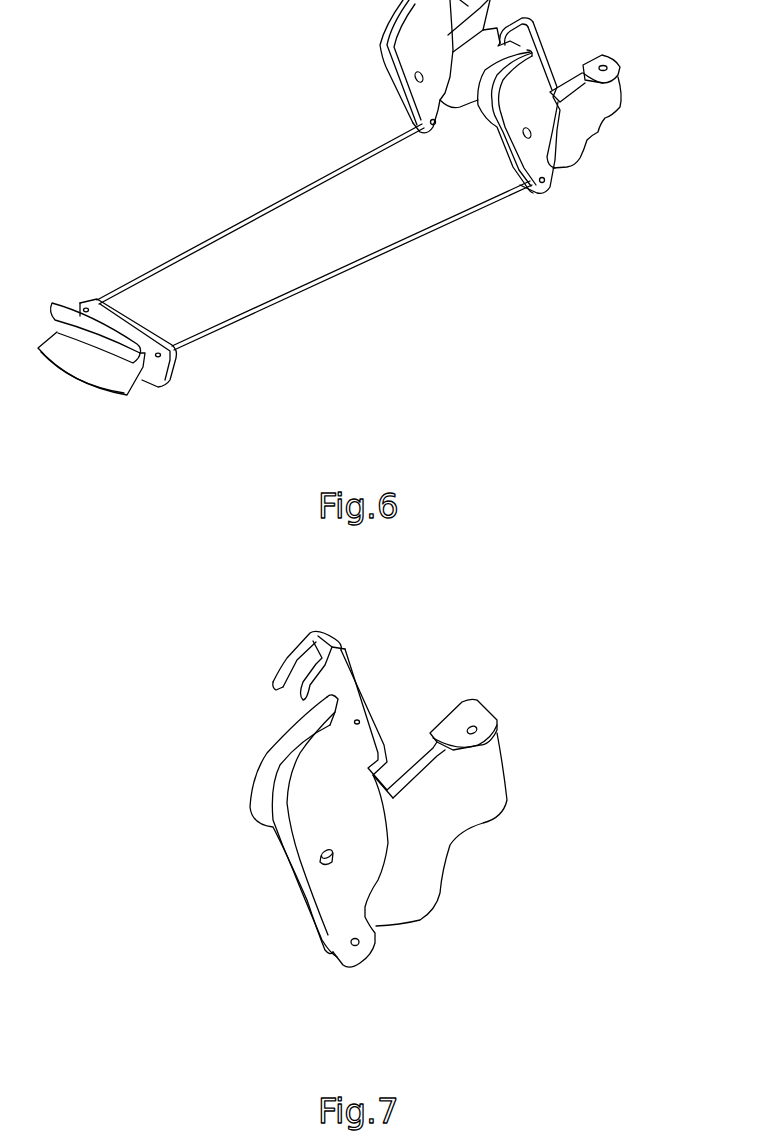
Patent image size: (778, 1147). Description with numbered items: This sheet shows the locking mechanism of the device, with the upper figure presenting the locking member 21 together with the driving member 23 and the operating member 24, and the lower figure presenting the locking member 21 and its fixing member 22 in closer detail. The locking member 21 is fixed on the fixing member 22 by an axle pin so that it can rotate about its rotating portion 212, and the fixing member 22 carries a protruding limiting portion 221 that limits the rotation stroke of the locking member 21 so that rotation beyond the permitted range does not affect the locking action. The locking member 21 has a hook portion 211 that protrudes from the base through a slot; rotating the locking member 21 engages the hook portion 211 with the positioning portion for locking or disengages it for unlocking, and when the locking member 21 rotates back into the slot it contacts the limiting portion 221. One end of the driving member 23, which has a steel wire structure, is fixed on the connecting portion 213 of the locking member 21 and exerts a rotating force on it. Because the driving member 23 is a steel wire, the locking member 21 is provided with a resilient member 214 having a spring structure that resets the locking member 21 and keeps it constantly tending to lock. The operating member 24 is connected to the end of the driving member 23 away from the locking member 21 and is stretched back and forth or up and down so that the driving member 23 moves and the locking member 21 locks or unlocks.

In FIG. 6, the locking member 21 is at (533, 157).
In FIG. 7, the locking member 21 is at (238, 802).
In FIG. 6, the fixing member 22 is at (575, 118).
In FIG. 7, the fixing member 22 is at (494, 812).
In FIG. 6, the driving member 23 is at (308, 283).
In FIG. 6, the operating member 24 is at (117, 368).
In FIG. 7, the hook portion 211 is at (328, 707).
In FIG. 7, the rotating portion 212 is at (322, 863).
In FIG. 7, the connecting portion 213 is at (264, 955).
In FIG. 7, the resilient member 214 is at (324, 856).
In FIG. 7, the limiting portion 221 is at (457, 738).